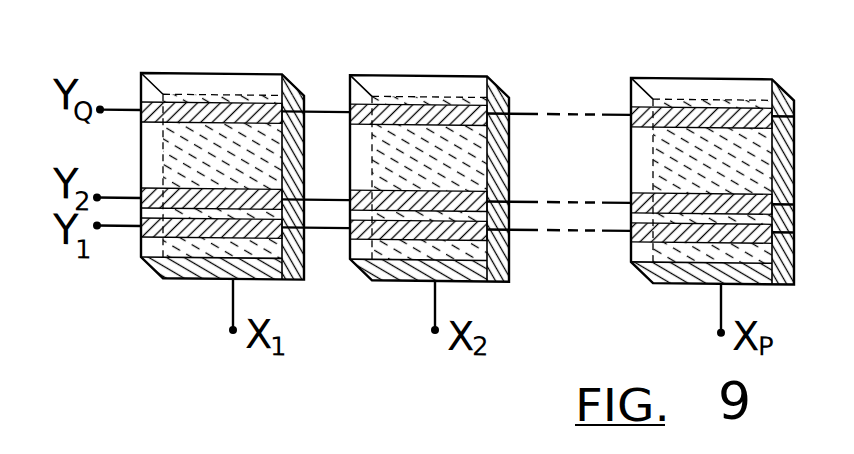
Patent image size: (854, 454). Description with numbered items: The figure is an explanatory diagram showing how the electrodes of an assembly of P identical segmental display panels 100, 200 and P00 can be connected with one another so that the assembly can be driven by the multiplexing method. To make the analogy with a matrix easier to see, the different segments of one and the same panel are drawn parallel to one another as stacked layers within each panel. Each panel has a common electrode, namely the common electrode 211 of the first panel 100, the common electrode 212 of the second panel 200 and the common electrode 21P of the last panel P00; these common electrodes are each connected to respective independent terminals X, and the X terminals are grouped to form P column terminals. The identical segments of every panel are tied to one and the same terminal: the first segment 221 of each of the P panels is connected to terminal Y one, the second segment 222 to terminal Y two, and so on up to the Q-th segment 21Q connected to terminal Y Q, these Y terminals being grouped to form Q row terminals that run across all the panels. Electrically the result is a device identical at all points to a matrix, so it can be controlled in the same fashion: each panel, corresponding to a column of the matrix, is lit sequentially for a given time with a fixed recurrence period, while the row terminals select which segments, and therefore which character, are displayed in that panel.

The first panel 100 is at (291, 98).
The second panel 200 is at (506, 96).
The P-th panel P00 is at (787, 68).
The Q-th segment 21Q is at (688, 102).
The second segment 222 is at (631, 188).
The first segment 221 is at (637, 261).
The common electrode of first panel 211 is at (207, 263).
The common electrode of second panel 212 is at (403, 307).
The common electrode of P-th panel 21P is at (687, 310).